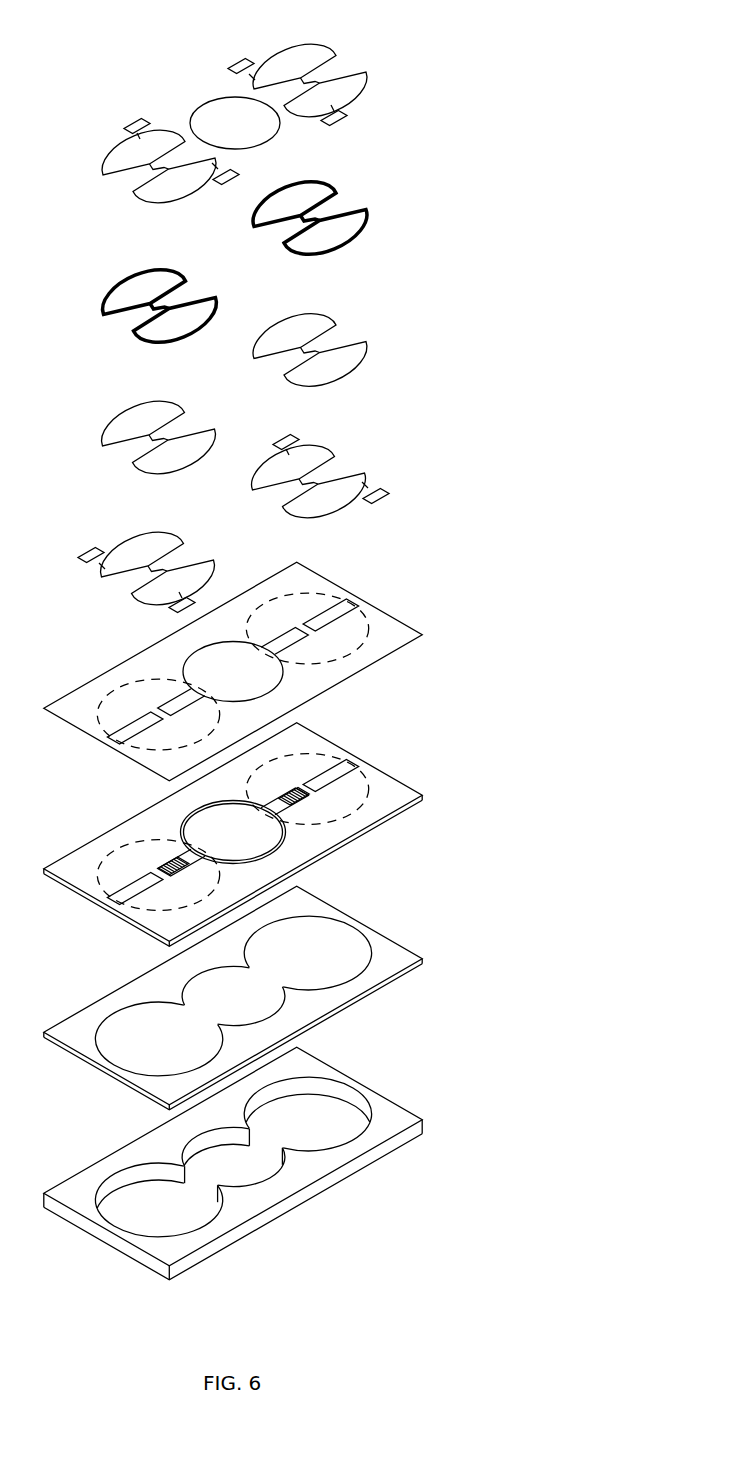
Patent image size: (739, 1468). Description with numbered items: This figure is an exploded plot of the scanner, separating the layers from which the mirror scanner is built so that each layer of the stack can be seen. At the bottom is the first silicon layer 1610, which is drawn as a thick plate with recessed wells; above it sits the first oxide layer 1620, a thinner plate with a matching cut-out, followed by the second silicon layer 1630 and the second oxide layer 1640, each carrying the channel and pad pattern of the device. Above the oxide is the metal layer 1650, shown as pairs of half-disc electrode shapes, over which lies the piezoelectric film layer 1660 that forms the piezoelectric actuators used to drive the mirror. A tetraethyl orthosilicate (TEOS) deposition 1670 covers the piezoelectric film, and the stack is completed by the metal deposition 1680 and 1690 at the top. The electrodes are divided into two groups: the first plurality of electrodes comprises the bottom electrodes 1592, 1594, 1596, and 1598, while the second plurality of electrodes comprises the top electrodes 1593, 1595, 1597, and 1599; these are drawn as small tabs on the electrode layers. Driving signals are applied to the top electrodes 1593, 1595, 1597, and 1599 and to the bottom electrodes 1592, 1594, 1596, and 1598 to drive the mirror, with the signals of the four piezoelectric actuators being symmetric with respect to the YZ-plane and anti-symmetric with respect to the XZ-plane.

The first silicon layer 1610 is at (460, 1142).
The first oxide layer 1620 is at (463, 973).
The second silicon layer 1630 is at (480, 805).
The second oxide layer 1640 is at (476, 635).
The metal layer 1650 is at (317, 514).
The piezoelectric film layer 1660 is at (408, 380).
The tetraethyl orthosilicate (TEOS) deposition 1670 is at (401, 265).
The metal deposition 1680 is at (308, 138).
The metal deposition 1690 is at (313, 118).
The bottom electrode 1592 is at (283, 442).
The top electrode 1593 is at (237, 68).
The bottom electrode 1594 is at (87, 557).
The top electrode 1595 is at (132, 130).
The bottom electrode 1596 is at (175, 613).
The top electrode 1597 is at (228, 177).
The bottom electrode 1598 is at (375, 498).
The top electrode 1599 is at (330, 117).